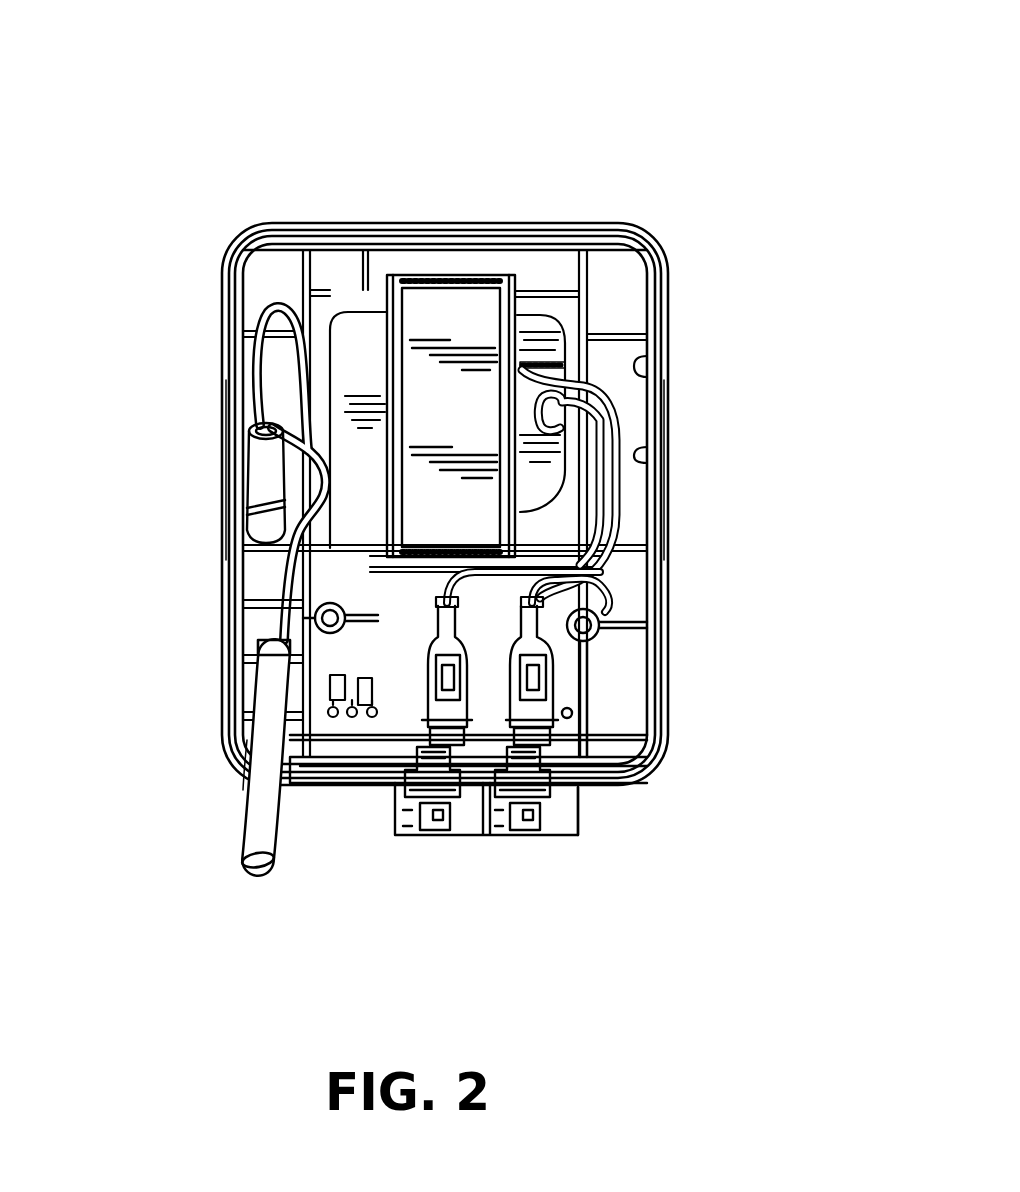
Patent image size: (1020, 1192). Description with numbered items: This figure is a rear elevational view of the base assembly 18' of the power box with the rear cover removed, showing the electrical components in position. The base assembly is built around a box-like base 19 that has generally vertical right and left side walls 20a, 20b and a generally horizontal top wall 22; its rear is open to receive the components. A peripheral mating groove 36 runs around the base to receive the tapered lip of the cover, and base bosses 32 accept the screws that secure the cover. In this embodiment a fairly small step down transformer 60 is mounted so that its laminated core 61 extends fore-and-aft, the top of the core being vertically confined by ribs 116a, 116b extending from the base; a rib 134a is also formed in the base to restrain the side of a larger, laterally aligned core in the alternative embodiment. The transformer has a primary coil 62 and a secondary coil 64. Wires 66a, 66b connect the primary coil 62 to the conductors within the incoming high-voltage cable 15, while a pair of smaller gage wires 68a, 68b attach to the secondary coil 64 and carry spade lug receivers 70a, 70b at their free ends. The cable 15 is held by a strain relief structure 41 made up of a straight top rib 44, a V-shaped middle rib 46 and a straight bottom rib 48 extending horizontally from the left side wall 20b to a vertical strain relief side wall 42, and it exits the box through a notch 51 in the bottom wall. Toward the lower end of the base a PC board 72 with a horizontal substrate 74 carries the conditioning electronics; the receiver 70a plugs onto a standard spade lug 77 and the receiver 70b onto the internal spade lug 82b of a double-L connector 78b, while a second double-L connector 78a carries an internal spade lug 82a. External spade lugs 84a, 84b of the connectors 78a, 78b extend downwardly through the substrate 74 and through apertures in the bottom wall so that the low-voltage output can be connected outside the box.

The base assembly 18' is at (554, 61).
The base 19 is at (680, 288).
The top wall 22 is at (305, 237).
The primary coil 62 is at (330, 322).
The step down transformer 60 is at (383, 275).
The rib 116b is at (408, 262).
The rib 116a is at (505, 265).
The transformer core 61 is at (460, 276).
The secondary coil 64 is at (530, 325).
The peripheral mating groove 36 is at (640, 246).
The wire 66a is at (255, 370).
The wire 66b is at (268, 399).
The right side wall 20a is at (664, 443).
The left side wall 20b is at (245, 497).
The rib 134a is at (652, 372).
The smaller gage wire 68a is at (616, 412).
The smaller gage wire 68b is at (605, 486).
The spade lug receiver 70a is at (440, 700).
The spade lug receiver 70b is at (553, 690).
The standard spade lug 77 is at (438, 700).
The base boss 32 is at (635, 636).
The internal spade lug 82a is at (412, 752).
The internal spade lug 82b is at (535, 673).
The top rib 44 is at (245, 603).
The middle rib 46 is at (248, 658).
The strain relief structure 41 is at (220, 699).
The bottom rib 48 is at (243, 712).
The strain relief side wall 42 is at (305, 785).
The 120 VAC cable 15 is at (253, 867).
The notch 51 is at (247, 787).
The substrate 74 is at (615, 752).
The PC board 72 is at (593, 758).
The double-L connector 78a is at (410, 753).
The double-L connector 78b is at (503, 753).
The external spade lug 84a is at (472, 835).
The external spade lug 84b is at (558, 825).